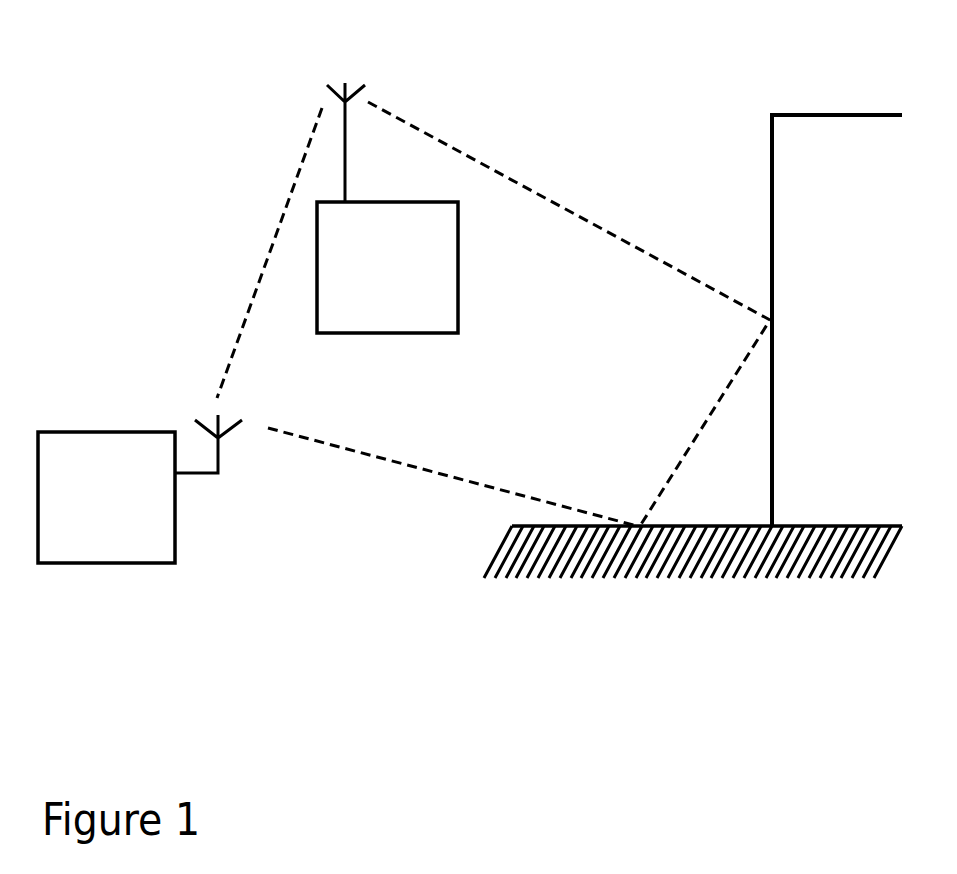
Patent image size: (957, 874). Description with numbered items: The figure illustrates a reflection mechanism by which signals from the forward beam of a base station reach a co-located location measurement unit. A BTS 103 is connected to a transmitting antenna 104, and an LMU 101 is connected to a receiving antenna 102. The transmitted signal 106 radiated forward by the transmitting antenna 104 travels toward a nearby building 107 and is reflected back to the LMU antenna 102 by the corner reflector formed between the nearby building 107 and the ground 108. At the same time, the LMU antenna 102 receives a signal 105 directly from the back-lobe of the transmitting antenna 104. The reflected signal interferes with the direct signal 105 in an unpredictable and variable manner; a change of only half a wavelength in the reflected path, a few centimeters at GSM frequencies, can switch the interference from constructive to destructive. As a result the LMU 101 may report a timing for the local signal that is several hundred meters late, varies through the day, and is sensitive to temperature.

The LMU 101 is at (106, 497).
The receiving antenna 102 is at (238, 435).
The BTS 103 is at (387, 267).
The transmitting antenna 104 is at (342, 73).
The signal received directly 105 is at (278, 212).
The transmitted signal 106 is at (620, 230).
The nearby building 107 is at (837, 320).
The ground 108 is at (693, 575).